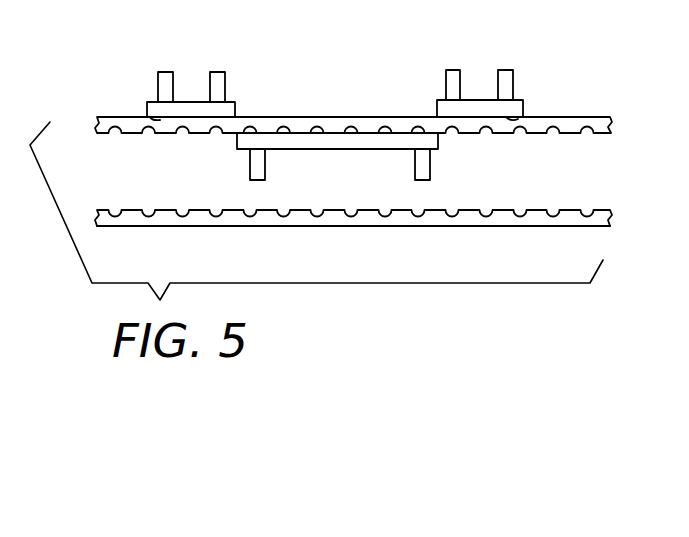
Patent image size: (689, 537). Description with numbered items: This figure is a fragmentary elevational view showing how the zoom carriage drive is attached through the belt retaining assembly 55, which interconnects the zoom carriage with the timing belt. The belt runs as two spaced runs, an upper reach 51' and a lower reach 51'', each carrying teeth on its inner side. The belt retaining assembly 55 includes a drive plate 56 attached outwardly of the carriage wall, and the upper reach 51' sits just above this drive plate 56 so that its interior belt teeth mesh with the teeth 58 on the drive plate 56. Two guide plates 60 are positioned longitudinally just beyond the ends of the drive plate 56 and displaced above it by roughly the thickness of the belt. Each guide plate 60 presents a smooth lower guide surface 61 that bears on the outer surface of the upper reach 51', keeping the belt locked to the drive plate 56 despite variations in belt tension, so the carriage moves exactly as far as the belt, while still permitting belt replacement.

The upper reach 51' is at (340, 151).
The lower reach 51'' is at (353, 239).
The belt retaining assembly 55 is at (388, 106).
The drive plate 56 is at (352, 140).
The teeth 58 is at (285, 130).
The guide plates 60 is at (226, 107).
The smooth lower guide surface 61 is at (162, 118).